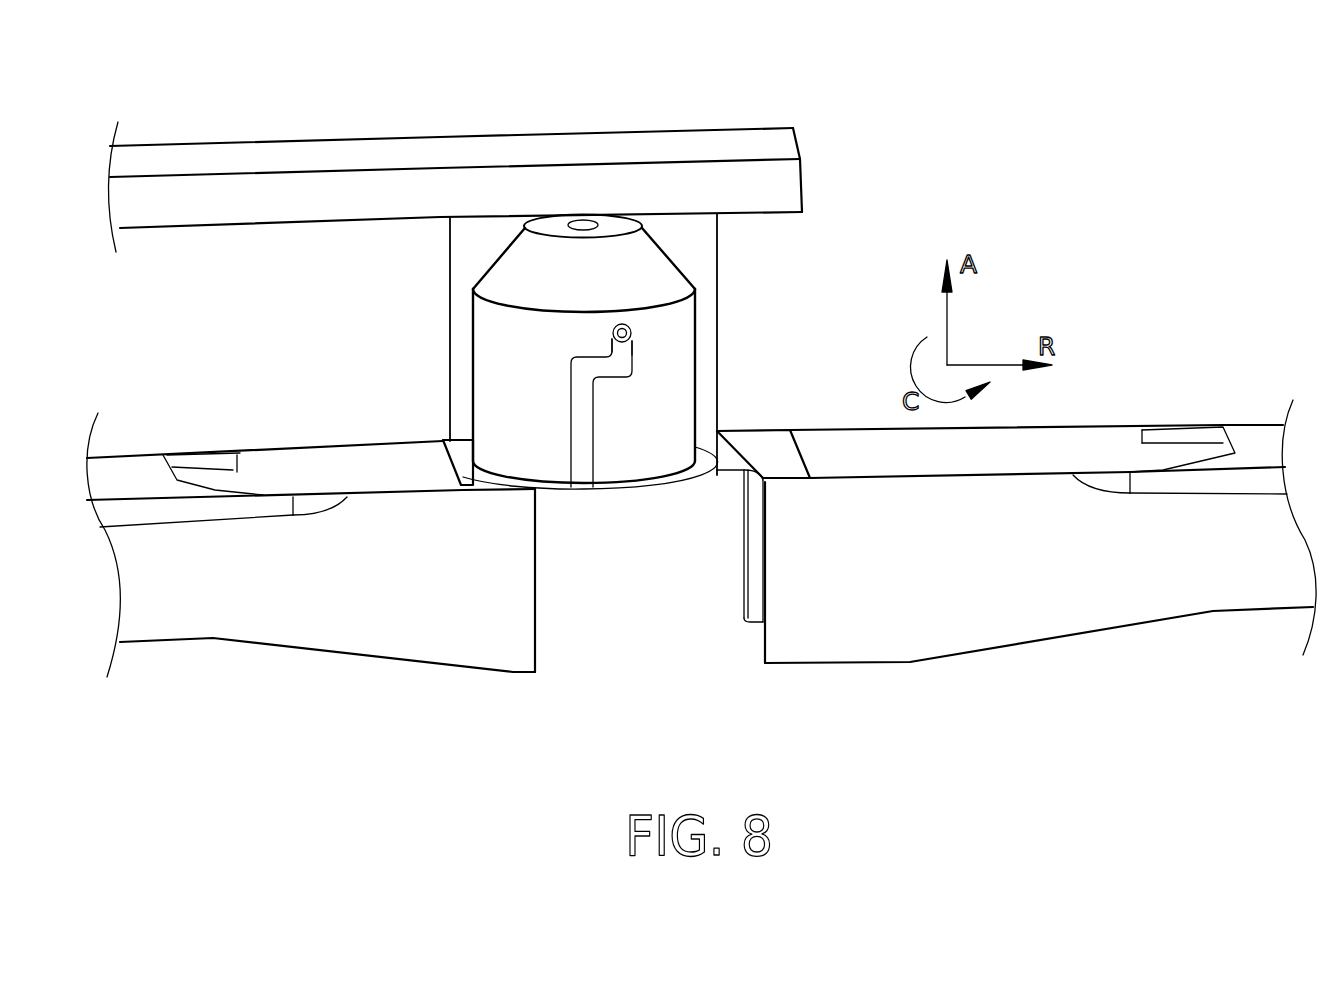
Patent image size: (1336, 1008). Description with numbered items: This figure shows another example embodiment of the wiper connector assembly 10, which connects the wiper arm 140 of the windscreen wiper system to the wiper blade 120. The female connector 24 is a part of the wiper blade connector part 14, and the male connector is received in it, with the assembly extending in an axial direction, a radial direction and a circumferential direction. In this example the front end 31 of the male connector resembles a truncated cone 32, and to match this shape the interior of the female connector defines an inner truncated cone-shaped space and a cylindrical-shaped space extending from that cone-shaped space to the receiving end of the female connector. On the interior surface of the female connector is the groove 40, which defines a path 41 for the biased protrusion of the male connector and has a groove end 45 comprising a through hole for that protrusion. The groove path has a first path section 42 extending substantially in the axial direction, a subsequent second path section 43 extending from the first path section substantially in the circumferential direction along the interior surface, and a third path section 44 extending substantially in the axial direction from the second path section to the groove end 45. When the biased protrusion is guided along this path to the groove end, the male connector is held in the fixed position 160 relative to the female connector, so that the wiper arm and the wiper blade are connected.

The wiper arm 140 is at (465, 153).
The fixed position 160 is at (918, 156).
The wiper connector assembly 10 is at (946, 186).
The wiper blade connector part 14 is at (647, 344).
The female connector 24 is at (692, 250).
The front end 31 is at (565, 257).
The truncated cone 32 is at (588, 272).
The groove 40 is at (513, 386).
The path 41 is at (523, 422).
The first path section 42 is at (580, 403).
The second path section 43 is at (602, 368).
The third path section 44 is at (622, 353).
The groove end 45 is at (632, 340).
The wiper blade 120 is at (447, 583).